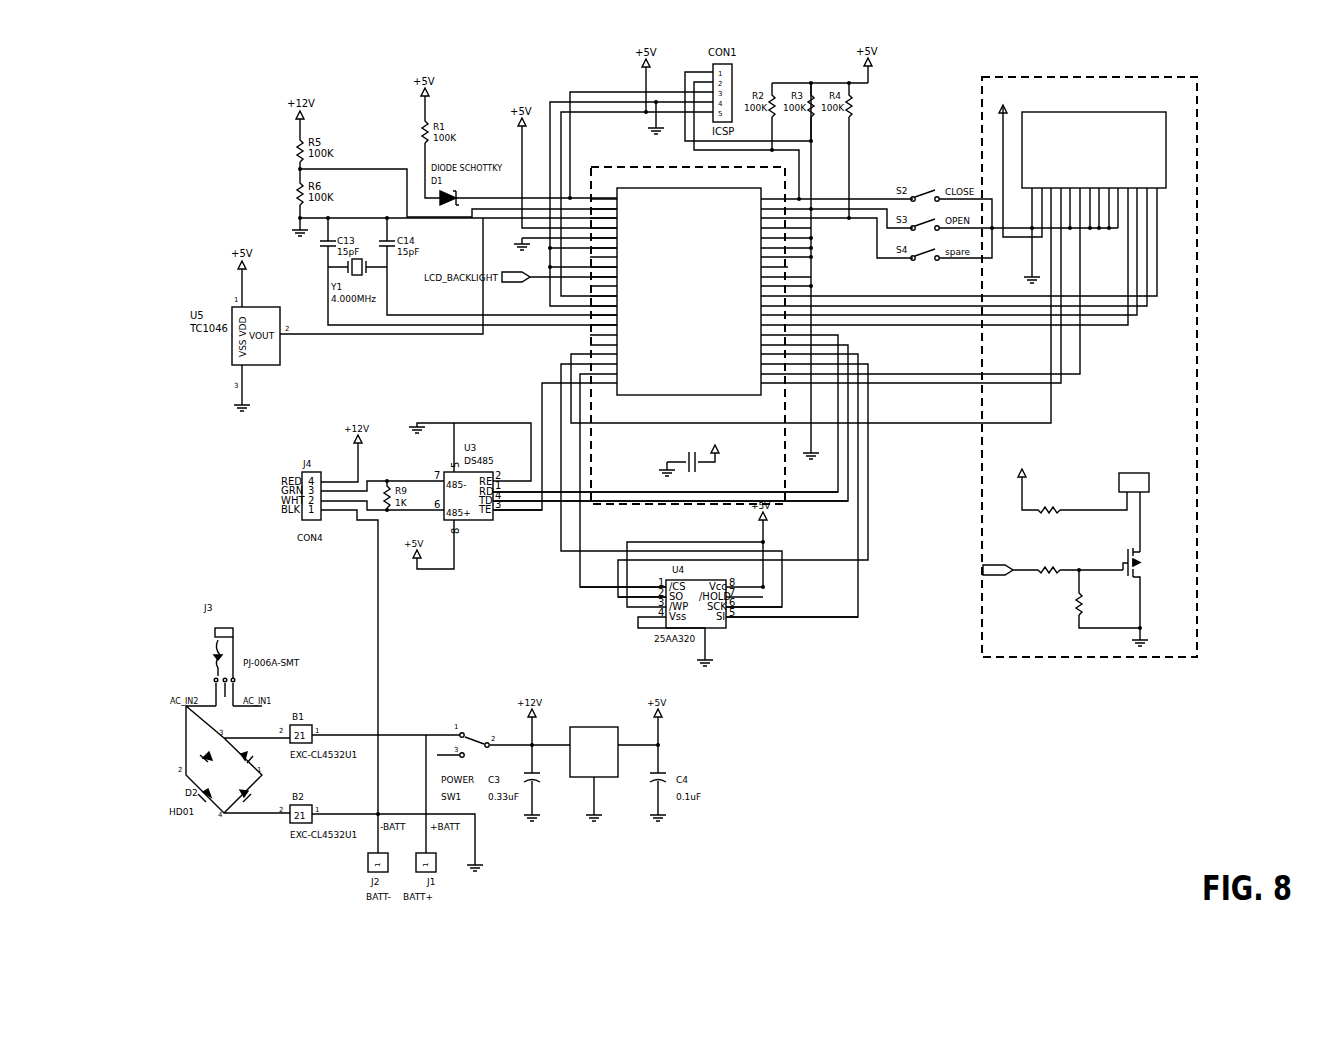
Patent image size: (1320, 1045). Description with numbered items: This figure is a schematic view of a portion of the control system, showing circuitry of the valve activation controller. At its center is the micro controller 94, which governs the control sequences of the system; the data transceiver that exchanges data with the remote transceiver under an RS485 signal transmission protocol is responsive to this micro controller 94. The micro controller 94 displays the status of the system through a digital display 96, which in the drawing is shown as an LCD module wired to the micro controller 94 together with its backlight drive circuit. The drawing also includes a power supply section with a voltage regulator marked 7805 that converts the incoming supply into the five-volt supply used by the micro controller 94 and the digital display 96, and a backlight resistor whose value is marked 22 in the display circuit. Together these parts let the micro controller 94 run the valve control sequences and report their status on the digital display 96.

The micro controller 94 is at (631, 168).
The digital display 96 is at (981, 118).
The voltage regulator U2 7805 is at (593, 761).
The backlight resistor R7 22 is at (1068, 497).